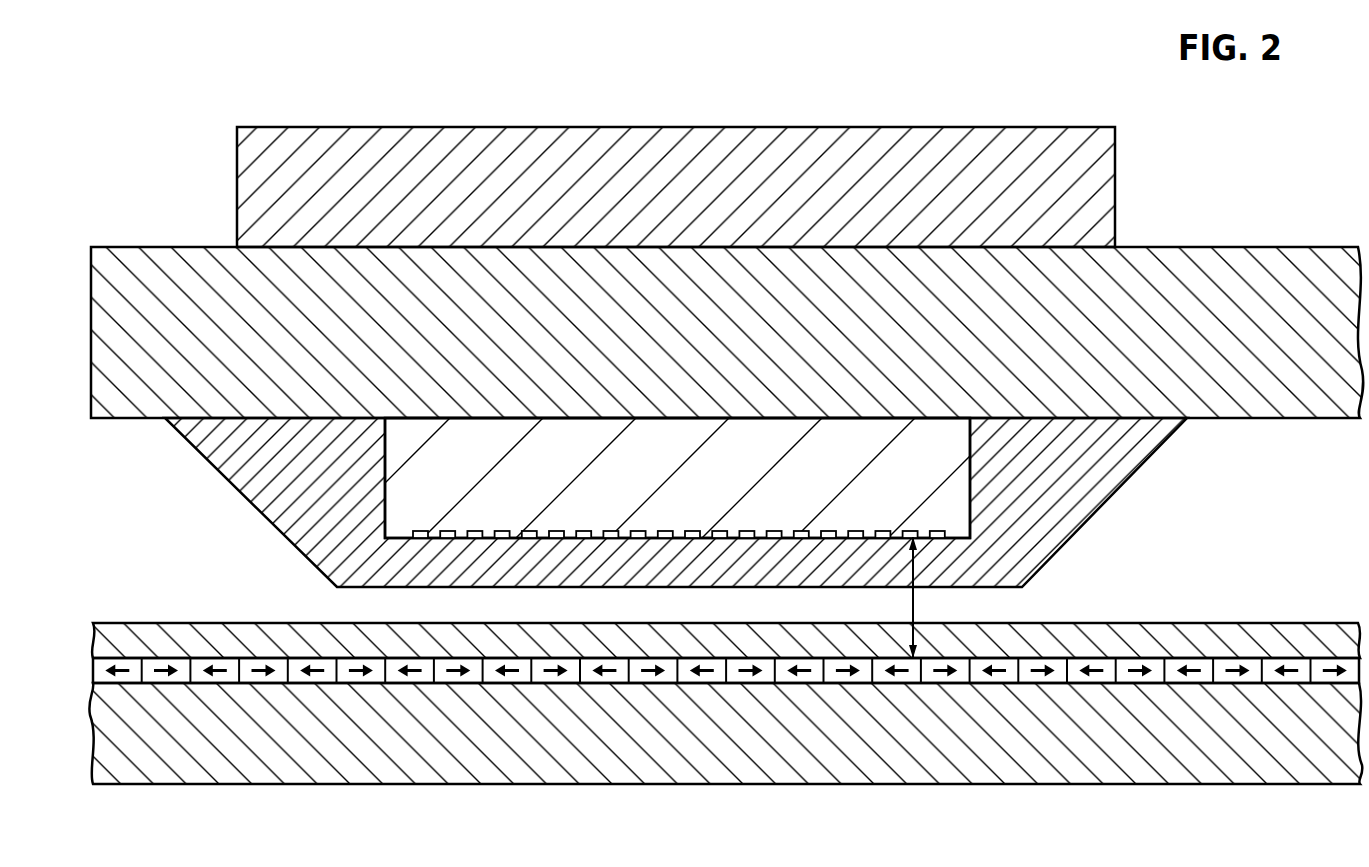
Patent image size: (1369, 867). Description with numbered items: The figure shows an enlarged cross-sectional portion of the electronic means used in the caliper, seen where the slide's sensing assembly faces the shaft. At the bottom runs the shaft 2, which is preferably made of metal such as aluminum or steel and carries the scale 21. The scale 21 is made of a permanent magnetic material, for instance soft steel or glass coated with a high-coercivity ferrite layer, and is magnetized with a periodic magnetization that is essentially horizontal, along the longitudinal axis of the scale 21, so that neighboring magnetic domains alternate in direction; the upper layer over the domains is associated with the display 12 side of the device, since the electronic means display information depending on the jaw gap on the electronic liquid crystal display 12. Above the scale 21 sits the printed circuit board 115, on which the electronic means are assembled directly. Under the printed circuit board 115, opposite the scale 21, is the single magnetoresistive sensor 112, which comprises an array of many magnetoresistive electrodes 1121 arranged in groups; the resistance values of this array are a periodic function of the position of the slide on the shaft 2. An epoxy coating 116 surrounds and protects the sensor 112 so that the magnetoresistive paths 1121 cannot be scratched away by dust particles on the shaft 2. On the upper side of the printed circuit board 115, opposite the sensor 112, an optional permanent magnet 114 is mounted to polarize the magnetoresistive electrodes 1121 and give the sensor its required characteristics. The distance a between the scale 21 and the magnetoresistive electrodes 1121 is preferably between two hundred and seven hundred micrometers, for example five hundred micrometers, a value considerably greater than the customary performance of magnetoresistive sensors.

The permanent magnet 114 is at (297, 158).
The printed circuit board 115 is at (1255, 258).
The epoxy coating 116 is at (253, 468).
The magnetoresistive sensor 112 is at (418, 490).
The magnetoresistive electrodes 1121 is at (557, 529).
The electronic liquid crystal display 12 is at (1262, 642).
The scale 21 is at (1073, 668).
The shaft 2 is at (555, 742).
The distance a is at (910, 603).